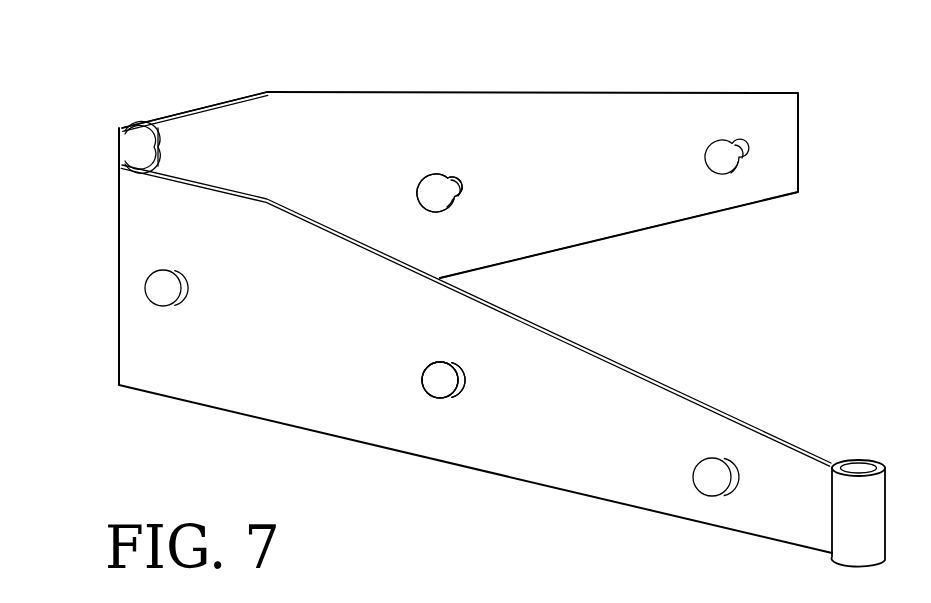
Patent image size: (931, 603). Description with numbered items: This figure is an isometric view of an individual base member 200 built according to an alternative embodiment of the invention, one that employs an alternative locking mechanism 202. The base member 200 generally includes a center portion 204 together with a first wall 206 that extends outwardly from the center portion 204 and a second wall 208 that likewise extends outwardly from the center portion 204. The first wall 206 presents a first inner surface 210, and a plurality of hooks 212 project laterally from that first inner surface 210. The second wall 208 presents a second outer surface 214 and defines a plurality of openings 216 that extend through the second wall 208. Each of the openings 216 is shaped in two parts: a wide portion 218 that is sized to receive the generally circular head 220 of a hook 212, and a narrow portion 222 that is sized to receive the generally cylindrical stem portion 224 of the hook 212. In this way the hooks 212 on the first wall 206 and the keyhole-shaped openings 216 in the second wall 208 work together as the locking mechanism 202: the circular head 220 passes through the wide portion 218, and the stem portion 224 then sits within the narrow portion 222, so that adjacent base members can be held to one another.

The individual base member 200 is at (198, 91).
The locking mechanism 202 is at (413, 412).
The center portion 204 is at (127, 145).
The first wall 206 is at (655, 515).
The second wall 208 is at (542, 92).
The first inner surface 210 is at (291, 395).
The hooks 212 is at (477, 424).
The second outer surface 214 is at (660, 200).
The openings 216 is at (464, 209).
The wide portion 218 is at (443, 175).
The narrow portion 222 is at (458, 180).
The circular head 220 is at (428, 378).
The stem portion 224 is at (462, 378).